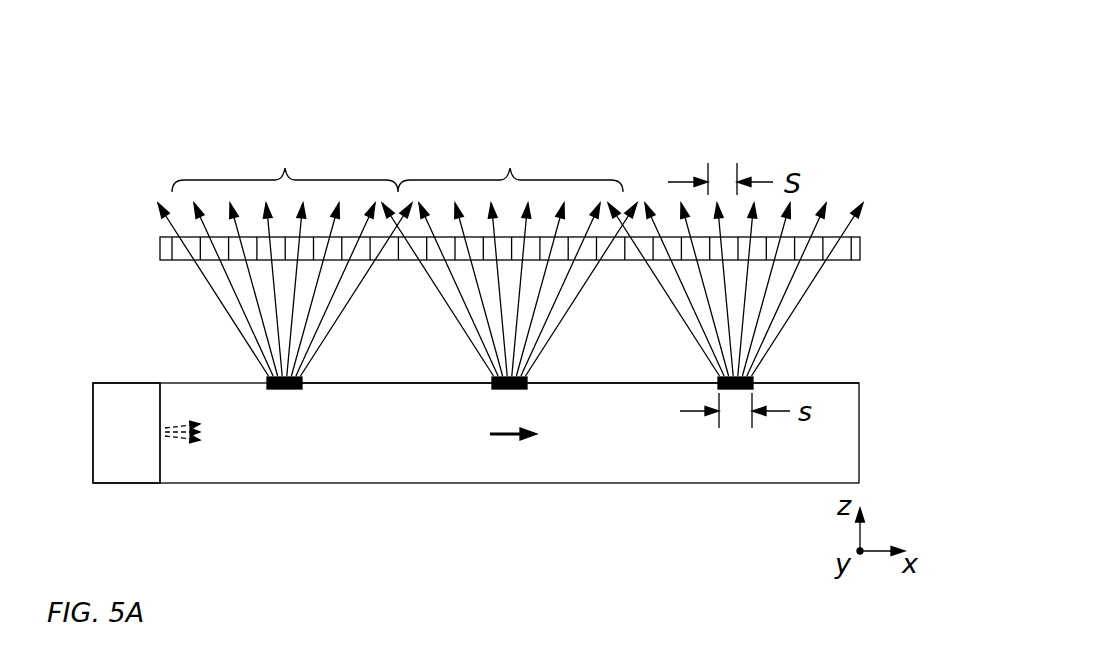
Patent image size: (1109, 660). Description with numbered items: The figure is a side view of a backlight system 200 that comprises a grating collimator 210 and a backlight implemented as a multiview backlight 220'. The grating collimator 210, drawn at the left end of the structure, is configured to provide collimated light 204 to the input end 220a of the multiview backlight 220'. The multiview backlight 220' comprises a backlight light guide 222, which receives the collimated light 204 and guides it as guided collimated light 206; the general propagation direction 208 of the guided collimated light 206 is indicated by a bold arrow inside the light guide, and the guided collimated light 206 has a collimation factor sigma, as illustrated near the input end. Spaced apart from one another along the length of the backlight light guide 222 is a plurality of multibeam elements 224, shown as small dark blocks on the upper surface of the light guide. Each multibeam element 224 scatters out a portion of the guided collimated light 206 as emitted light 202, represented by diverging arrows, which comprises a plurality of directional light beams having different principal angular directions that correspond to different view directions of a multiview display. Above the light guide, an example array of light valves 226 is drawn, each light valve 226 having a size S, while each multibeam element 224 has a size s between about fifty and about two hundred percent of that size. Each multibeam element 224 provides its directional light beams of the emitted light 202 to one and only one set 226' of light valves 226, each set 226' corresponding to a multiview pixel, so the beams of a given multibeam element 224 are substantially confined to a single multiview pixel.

The backlight system 200 is at (813, 90).
The emitted light 202 is at (863, 278).
The collimated light 204 is at (205, 455).
The guided collimated light 206 is at (205, 455).
The general propagation direction 208 is at (512, 453).
The grating collimator 210 is at (132, 495).
The input end 220a is at (152, 403).
The multiview backlight 220' is at (528, 430).
The backlight light guide 222 is at (835, 383).
The multibeam element 224 is at (320, 360).
The light valve 226 is at (464, 186).
The set of light valves 226' is at (397, 162).